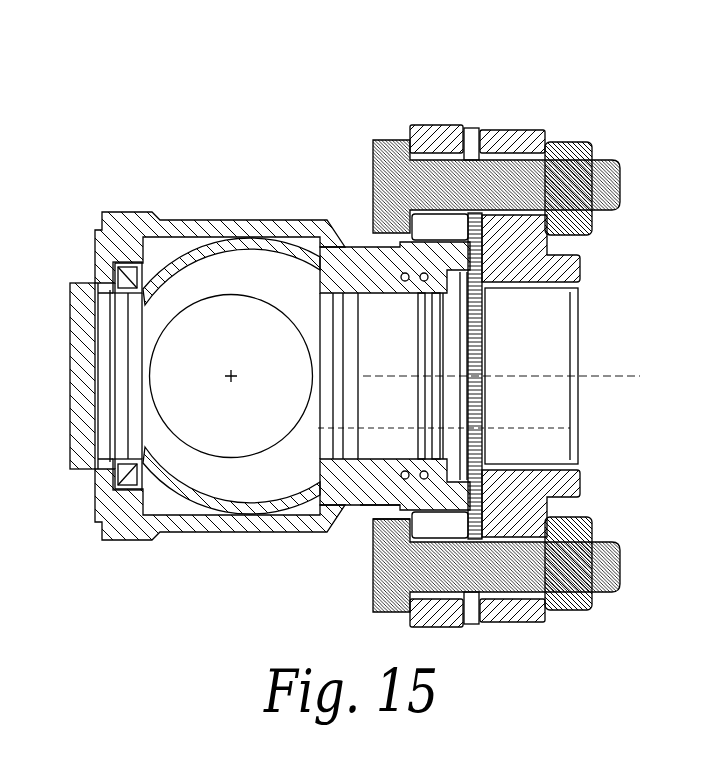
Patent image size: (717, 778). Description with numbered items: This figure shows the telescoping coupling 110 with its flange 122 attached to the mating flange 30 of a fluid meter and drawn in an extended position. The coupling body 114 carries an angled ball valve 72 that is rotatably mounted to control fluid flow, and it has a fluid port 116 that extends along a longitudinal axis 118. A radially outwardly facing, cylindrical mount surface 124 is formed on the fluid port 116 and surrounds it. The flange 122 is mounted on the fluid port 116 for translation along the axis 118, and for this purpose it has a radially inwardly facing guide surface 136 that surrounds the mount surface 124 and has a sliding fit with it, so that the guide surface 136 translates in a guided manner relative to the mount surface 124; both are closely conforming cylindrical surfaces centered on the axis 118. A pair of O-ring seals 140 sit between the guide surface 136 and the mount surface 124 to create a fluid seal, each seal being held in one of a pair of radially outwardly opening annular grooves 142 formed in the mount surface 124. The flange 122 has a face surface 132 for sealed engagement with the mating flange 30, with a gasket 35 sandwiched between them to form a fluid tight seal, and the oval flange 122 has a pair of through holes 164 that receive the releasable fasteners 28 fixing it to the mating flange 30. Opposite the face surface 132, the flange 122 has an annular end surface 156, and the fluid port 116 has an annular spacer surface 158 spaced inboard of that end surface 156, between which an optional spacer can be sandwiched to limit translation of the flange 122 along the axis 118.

The releasable fasteners 28 is at (620, 162).
The mating flange 30 is at (543, 130).
The gasket 35 is at (486, 413).
The ball valve 72 is at (179, 250).
The telescoping coupling 110 is at (272, 602).
The coupling body 114 is at (237, 220).
The fluid port 116 is at (442, 385).
The longitudinal axis 118 is at (612, 375).
The flange 122 is at (438, 125).
The mount surface 124 is at (367, 252).
The face surface 132 is at (557, 441).
The guide surface 136 is at (453, 253).
The O-ring seals 140 is at (420, 462).
The annular grooves 142 is at (404, 288).
The end surface 156 is at (375, 520).
The spacer surface 158 is at (380, 493).
The through holes 164 is at (460, 172).